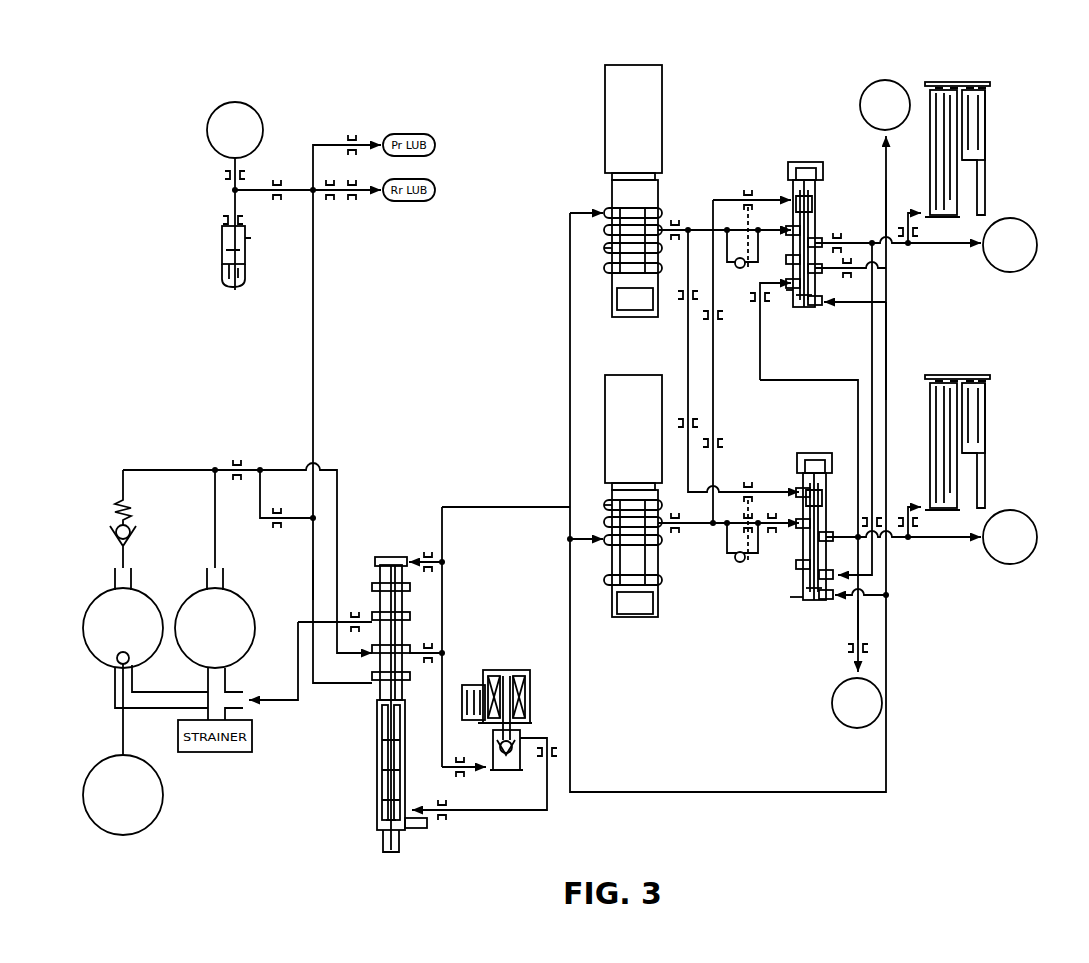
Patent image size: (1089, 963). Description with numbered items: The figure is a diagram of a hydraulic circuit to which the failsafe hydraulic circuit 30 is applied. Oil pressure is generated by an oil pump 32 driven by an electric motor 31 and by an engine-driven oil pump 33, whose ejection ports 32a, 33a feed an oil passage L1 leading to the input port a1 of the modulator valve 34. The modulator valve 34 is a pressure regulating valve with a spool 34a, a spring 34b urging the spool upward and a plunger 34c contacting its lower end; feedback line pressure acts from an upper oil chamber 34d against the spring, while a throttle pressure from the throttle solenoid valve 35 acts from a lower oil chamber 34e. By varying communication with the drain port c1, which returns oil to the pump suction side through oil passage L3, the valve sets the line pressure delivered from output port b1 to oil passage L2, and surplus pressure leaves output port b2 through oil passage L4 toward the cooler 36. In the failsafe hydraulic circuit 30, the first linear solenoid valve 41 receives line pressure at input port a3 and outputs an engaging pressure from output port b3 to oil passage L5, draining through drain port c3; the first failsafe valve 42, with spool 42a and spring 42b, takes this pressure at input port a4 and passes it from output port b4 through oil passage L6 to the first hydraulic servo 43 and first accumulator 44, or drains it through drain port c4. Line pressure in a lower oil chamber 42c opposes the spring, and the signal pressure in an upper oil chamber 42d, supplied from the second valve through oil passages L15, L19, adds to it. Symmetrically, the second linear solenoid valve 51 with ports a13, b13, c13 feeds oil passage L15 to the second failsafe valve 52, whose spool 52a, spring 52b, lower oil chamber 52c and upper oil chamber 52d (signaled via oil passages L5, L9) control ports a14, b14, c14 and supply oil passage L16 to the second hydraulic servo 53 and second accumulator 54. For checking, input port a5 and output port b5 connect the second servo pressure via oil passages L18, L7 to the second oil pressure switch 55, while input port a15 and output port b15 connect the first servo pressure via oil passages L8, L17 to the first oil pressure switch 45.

The failsafe hydraulic circuit 30 is at (745, 108).
The electric motor 31 is at (164, 801).
The oil pump 32 is at (140, 589).
The ejection port 32a is at (133, 578).
The oil pump 33 is at (231, 589).
The ejection port 33a is at (224, 578).
The modulator valve 34 is at (374, 671).
The spool 34a is at (380, 708).
The spring 34b is at (377, 736).
The plunger 34c is at (384, 773).
The upper oil chamber 34d is at (409, 560).
The lower oil chamber 34e is at (380, 812).
The throttle solenoid valve 35 is at (520, 672).
The cooler 36 is at (207, 130).
The first linear solenoid valve 41 is at (640, 65).
The first failsafe valve 42 is at (816, 240).
The spool 42a is at (818, 206).
The spring 42b is at (818, 180).
The lower oil chamber 42c is at (808, 310).
The upper oil chamber 42d is at (790, 188).
The first hydraulic servo 43 is at (1025, 224).
The first accumulator 44 is at (975, 83).
The first oil pressure switch 45 is at (832, 701).
The second linear solenoid valve 51 is at (640, 375).
The second failsafe valve 52 is at (846, 531).
The spool 52a is at (838, 491).
The spring 52b is at (838, 470).
The lower oil chamber 52c is at (822, 601).
The upper oil chamber 52d is at (800, 481).
The second hydraulic servo 53 is at (1025, 516).
The second accumulator 54 is at (975, 376).
The second oil pressure switch 55 is at (885, 80).
The oil passage L1 is at (288, 470).
The oil passage L2 is at (444, 598).
The oil passage L3 is at (297, 670).
The oil passage L4 is at (313, 578).
The oil passage L5 is at (690, 227).
The oil passage L6 is at (884, 240).
The oil passage L7 is at (890, 260).
The oil passage L8 is at (878, 362).
The oil passage L9 is at (686, 318).
The oil passage L15 is at (713, 532).
The oil passage L16 is at (935, 541).
The oil passage L17 is at (852, 660).
The oil passage L18 is at (832, 382).
The oil passage L19 is at (716, 358).
The input port a1 is at (367, 662).
The output port b1 is at (414, 645).
The drain port c1 is at (370, 617).
The output port b2 is at (370, 687).
The input port a3 is at (601, 211).
The output port b3 is at (660, 231).
The drain port c3 is at (605, 248).
The input port a4 is at (790, 231).
The output port b4 is at (820, 243).
The drain port c4 is at (779, 284).
The input port a5 is at (787, 292).
The output port b5 is at (829, 304).
The input port a13 is at (600, 545).
The output port b13 is at (661, 528).
The drain port c13 is at (605, 506).
The input port a14 is at (798, 531).
The output port b14 is at (835, 521).
The drain port c14 is at (799, 597).
The input port a15 is at (840, 599).
The output port b15 is at (838, 556).